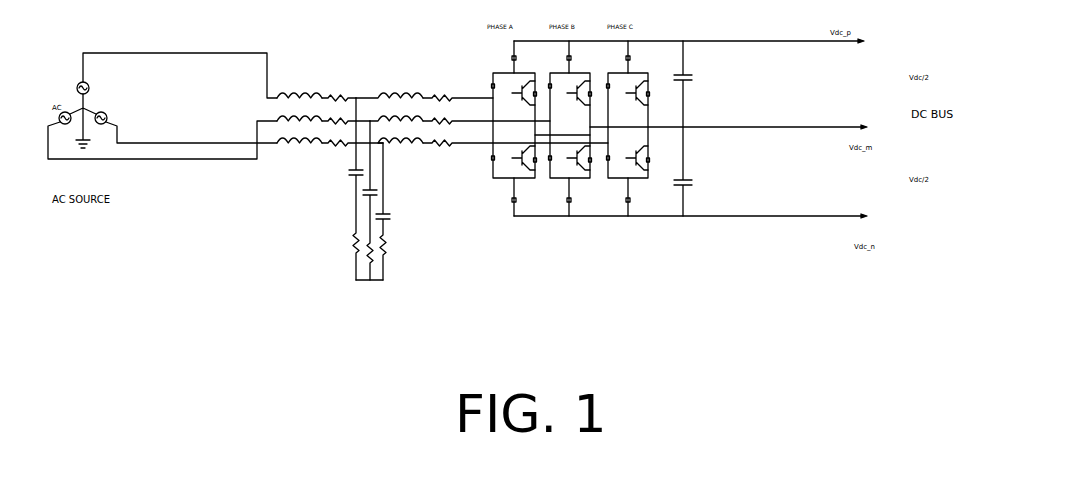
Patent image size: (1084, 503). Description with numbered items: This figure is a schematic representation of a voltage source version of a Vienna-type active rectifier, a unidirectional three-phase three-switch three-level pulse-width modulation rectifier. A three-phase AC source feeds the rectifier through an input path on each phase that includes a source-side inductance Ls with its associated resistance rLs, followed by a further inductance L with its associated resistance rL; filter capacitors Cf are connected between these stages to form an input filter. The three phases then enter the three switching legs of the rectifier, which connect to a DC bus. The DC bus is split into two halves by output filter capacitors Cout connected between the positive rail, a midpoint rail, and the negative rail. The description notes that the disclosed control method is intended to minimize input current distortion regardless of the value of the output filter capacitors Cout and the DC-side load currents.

The source-side inductor Ls is at (299, 128).
The source inductor resistance rLs is at (352, 129).
The filter inductor L is at (389, 131).
The filter inductor resistance rL is at (515, 130).
The filter capacitor Cf is at (359, 189).
The output filter capacitors Cout is at (693, 128).